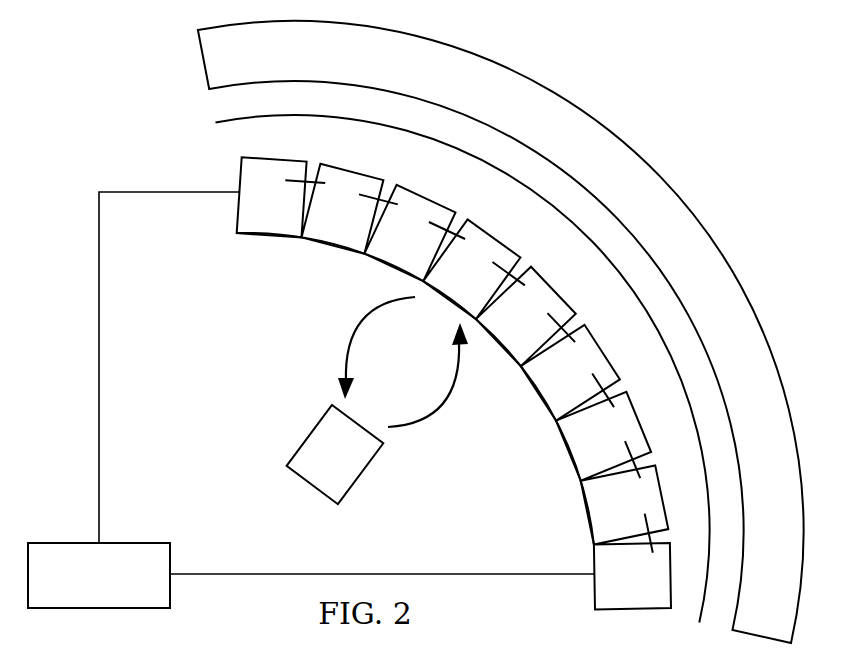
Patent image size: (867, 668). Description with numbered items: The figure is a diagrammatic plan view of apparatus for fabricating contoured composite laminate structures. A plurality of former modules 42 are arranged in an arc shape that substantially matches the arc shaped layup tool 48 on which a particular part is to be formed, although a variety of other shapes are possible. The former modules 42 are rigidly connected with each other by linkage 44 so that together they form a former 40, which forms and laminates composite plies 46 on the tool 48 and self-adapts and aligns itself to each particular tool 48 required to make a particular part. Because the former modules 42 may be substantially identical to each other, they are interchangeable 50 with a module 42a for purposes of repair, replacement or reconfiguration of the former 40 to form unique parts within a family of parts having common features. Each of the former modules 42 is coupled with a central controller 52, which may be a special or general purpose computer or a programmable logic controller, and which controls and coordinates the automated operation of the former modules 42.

The former 40 is at (354, 298).
The former modules 42 is at (240, 173).
The module 42a is at (313, 487).
The linkage 44 is at (377, 197).
The composite plies 46 is at (215, 122).
The layup tool 48 is at (682, 206).
The interchangeable 50 is at (416, 433).
The central controller 52 is at (70, 543).